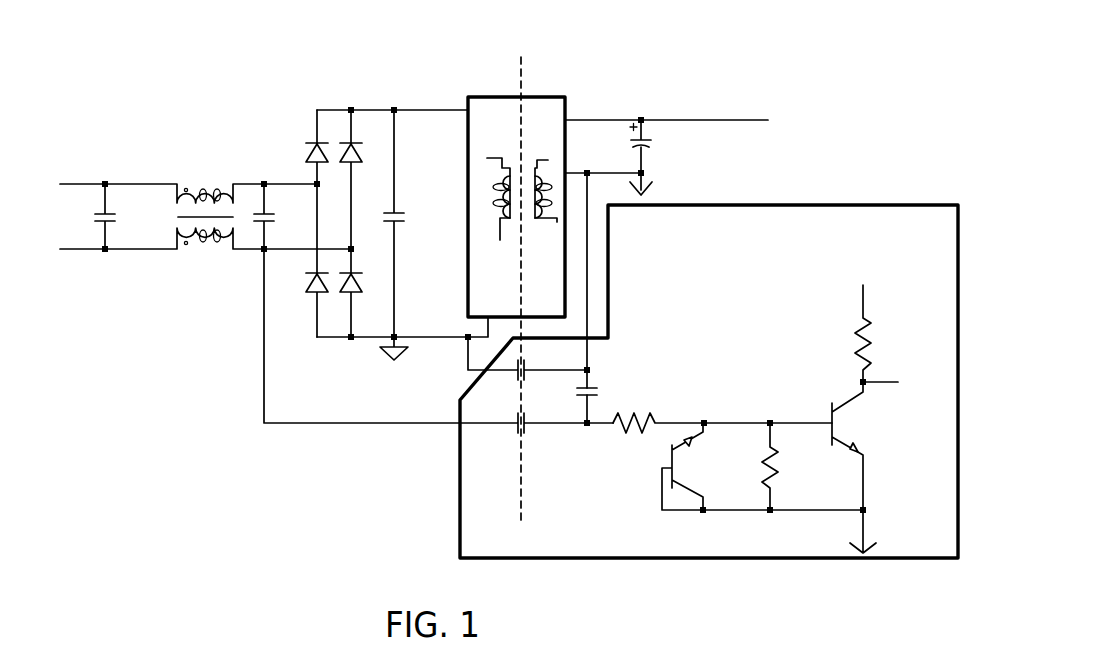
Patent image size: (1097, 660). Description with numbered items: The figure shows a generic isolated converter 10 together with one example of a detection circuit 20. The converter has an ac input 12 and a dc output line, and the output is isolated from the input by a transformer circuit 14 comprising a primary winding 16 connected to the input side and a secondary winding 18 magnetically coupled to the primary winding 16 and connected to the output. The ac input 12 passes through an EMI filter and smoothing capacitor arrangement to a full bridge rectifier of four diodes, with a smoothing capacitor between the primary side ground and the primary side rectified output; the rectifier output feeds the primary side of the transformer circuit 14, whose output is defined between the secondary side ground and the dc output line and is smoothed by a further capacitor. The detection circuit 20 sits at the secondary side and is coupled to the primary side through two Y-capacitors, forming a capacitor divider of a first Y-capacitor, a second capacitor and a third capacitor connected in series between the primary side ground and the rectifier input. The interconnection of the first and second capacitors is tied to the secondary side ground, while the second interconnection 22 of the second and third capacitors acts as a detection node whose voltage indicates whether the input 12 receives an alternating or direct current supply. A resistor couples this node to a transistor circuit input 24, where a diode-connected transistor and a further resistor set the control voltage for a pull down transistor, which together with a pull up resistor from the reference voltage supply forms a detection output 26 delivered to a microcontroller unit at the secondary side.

The isolated converter 10 is at (884, 87).
The ac input 12 is at (62, 217).
The transformer circuit 14 is at (549, 97).
The primary winding 16 is at (487, 158).
The secondary winding 18 is at (548, 160).
The detection circuit 20 is at (864, 205).
The second interconnection 22 is at (587, 424).
The transistor circuit input 24 is at (704, 423).
The detection output 26 is at (863, 382).